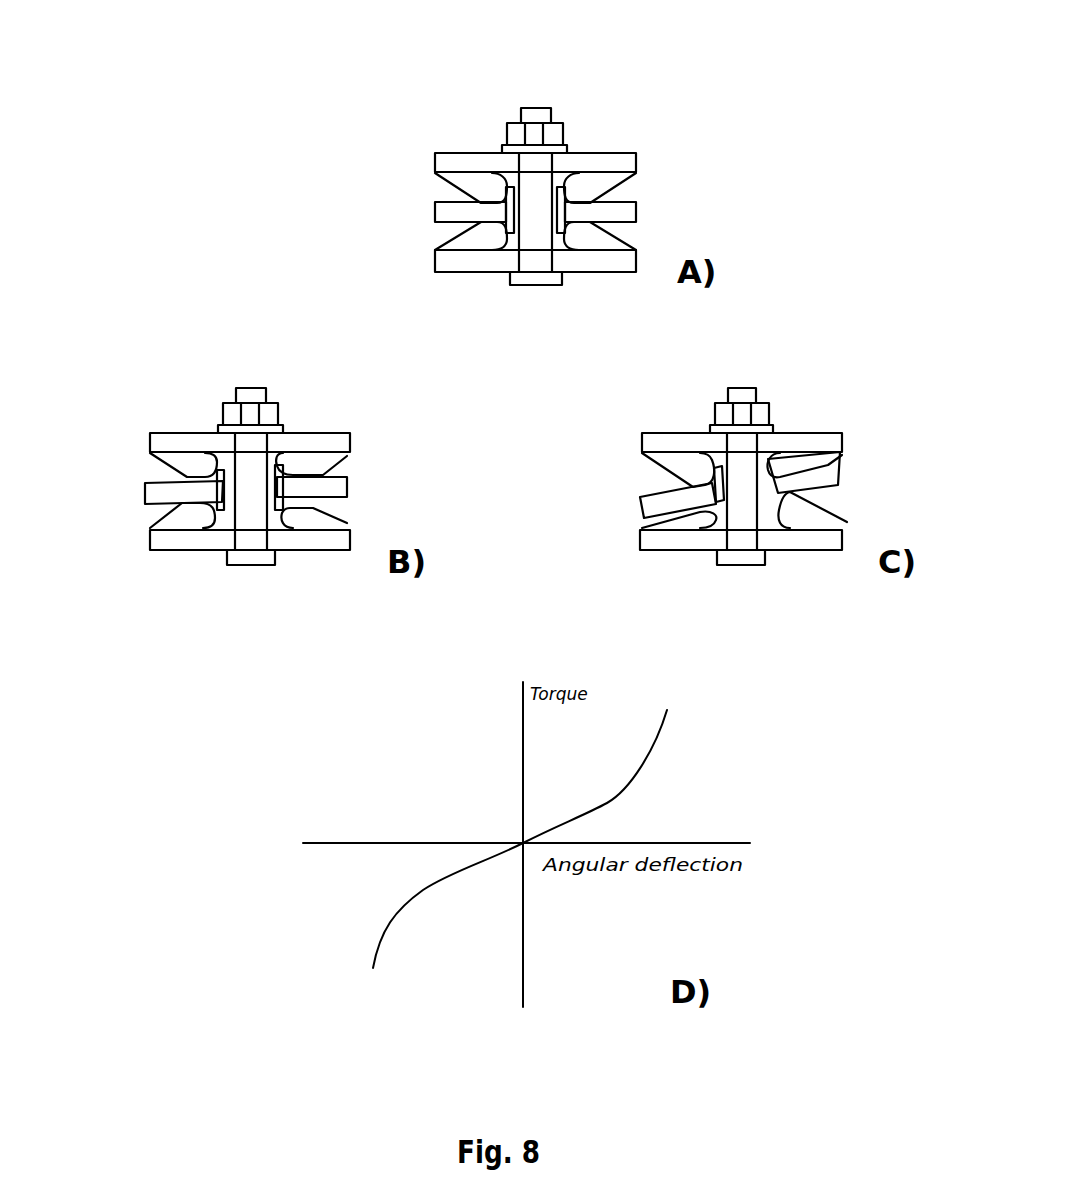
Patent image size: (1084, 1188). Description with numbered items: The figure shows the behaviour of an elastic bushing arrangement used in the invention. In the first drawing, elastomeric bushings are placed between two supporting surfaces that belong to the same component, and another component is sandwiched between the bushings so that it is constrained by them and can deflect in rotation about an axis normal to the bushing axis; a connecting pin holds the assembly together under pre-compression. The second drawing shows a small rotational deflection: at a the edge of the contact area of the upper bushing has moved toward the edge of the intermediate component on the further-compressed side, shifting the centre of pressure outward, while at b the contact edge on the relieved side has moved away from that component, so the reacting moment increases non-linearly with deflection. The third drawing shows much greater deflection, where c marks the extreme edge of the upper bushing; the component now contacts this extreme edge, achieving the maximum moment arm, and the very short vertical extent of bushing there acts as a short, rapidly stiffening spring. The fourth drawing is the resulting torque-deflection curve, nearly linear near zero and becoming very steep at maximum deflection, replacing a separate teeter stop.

The edge of contact area on compressed side a is at (352, 465).
The edge of contact area on relieved side b is at (183, 468).
The extreme edge of upper bushing c is at (852, 445).